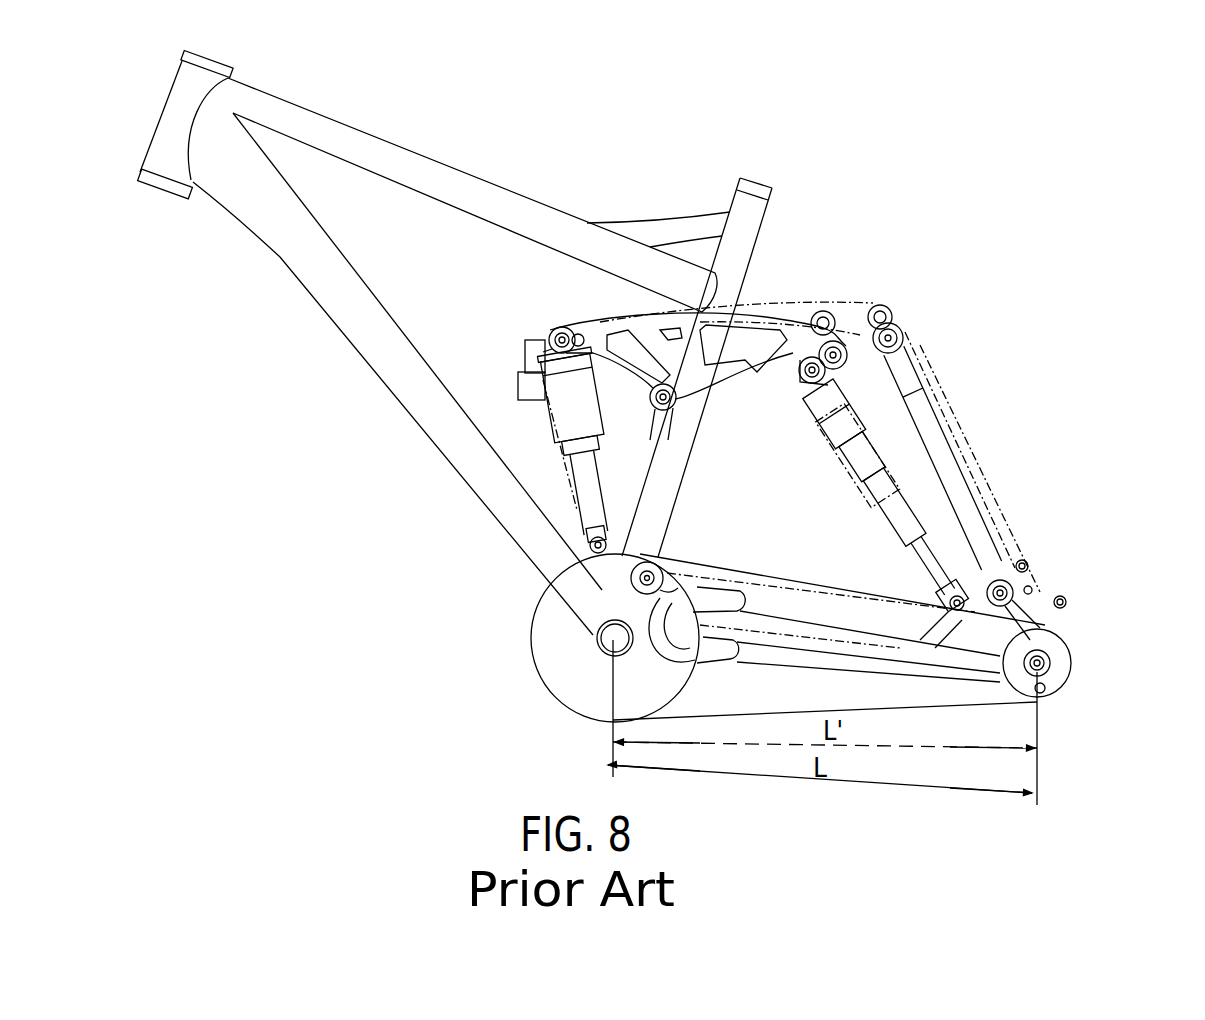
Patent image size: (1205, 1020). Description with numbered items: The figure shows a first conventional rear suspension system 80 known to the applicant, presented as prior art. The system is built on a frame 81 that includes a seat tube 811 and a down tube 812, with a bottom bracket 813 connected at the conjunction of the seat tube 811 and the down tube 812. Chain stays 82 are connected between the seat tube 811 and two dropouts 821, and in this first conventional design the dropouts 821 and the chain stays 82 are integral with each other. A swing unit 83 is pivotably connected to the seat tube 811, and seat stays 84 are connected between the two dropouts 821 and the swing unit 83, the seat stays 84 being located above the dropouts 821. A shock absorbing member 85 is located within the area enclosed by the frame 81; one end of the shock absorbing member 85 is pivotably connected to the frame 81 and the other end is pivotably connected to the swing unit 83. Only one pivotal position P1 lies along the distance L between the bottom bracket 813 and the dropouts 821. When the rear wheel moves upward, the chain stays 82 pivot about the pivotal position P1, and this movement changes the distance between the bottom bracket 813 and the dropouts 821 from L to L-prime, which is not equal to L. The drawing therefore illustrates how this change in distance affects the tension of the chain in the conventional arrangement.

The rear suspension system 80 is at (630, 428).
The frame 81 is at (455, 387).
The seat tube 811 is at (663, 490).
The down tube 812 is at (453, 455).
The bottom bracket 813 is at (615, 638).
The chain stays 82 is at (868, 679).
The dropouts 821 is at (1050, 666).
The swing unit 83 is at (795, 350).
The seat stays 84 is at (947, 470).
The shock absorbing member 85 is at (563, 417).
The pivotal position P1 is at (647, 578).